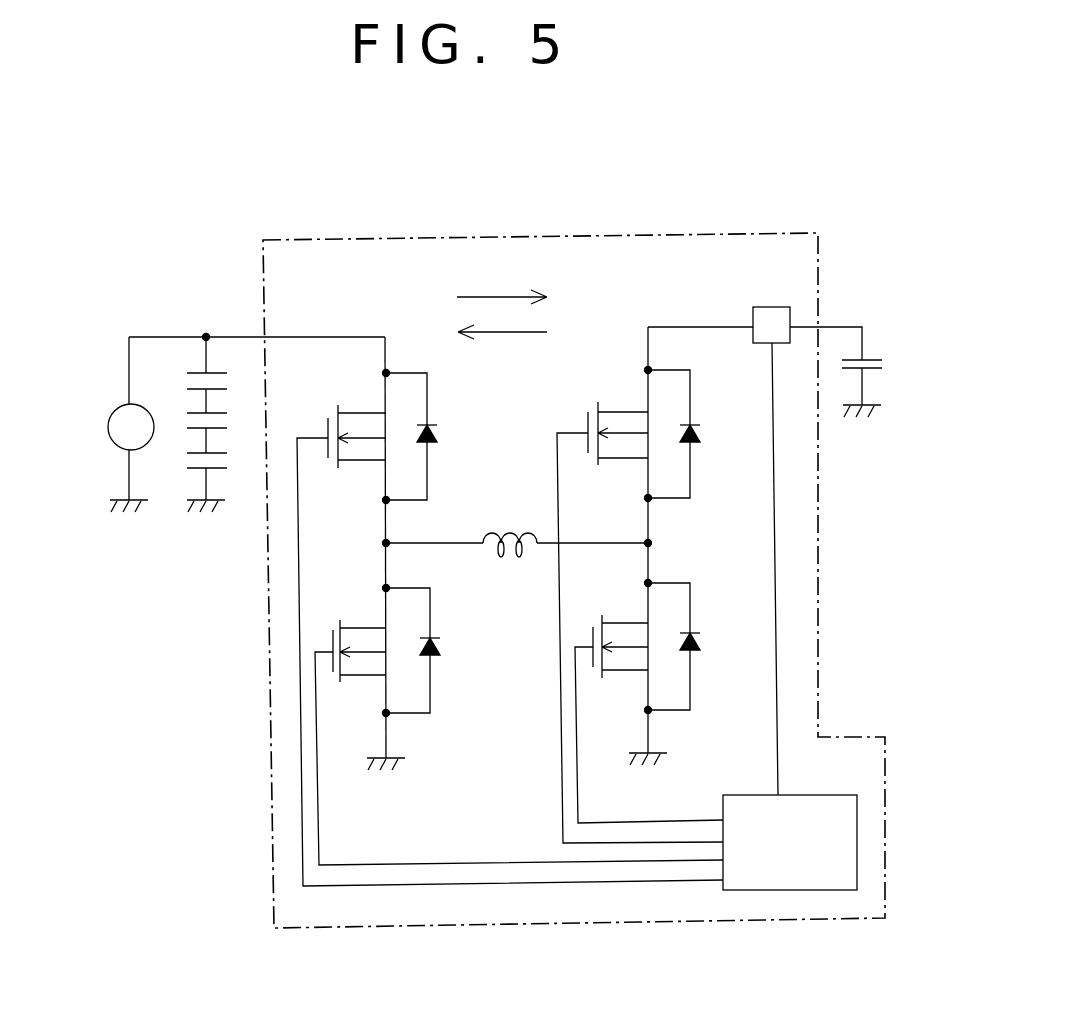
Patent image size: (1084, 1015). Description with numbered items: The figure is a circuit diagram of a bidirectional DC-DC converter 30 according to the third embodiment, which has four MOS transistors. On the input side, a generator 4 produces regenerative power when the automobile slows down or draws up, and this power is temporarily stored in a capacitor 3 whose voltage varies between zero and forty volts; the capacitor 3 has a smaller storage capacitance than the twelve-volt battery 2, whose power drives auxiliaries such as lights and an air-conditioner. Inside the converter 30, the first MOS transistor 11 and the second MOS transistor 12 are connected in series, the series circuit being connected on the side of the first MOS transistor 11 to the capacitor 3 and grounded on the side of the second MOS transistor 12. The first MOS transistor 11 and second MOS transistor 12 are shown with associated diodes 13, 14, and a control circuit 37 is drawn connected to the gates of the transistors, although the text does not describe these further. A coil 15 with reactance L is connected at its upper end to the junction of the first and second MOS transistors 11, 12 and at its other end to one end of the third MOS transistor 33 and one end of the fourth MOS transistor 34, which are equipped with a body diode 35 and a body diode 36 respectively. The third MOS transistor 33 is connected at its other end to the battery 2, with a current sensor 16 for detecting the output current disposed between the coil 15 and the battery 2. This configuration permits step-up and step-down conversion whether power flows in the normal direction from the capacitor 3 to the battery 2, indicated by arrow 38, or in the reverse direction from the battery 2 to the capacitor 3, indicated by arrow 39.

The charge/discharge unit (battery) 2 is at (870, 358).
The charge/discharge unit (capacitor) 3 is at (196, 470).
The generator 4 is at (108, 433).
The first MOS transistor 11 is at (327, 420).
The second MOS transistor 12 is at (333, 636).
The diode 13 is at (440, 433).
The diode 14 is at (440, 648).
The coil 15 is at (512, 522).
The current sensor 16 is at (773, 306).
The DC-DC converter 30 is at (676, 232).
The third MOS transistor 33 is at (586, 416).
The fourth MOS transistor 34 is at (594, 630).
The body diode 35 is at (700, 432).
The body diode 36 is at (700, 645).
The control circuit 37 is at (710, 888).
The arrow 38 is at (503, 294).
The arrow 39 is at (508, 337).